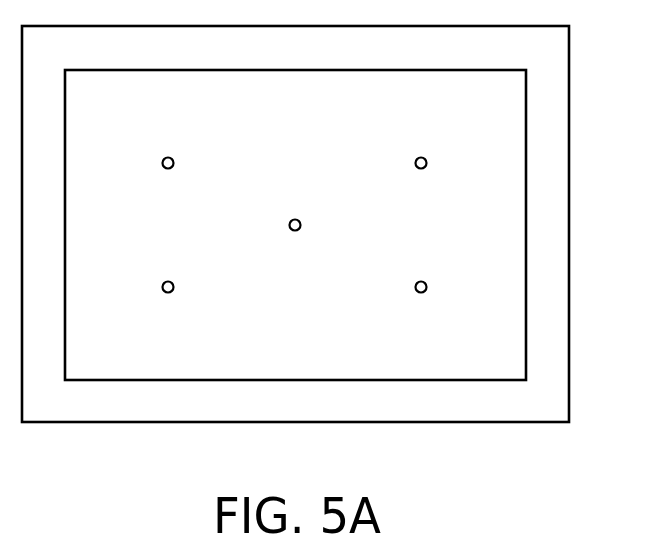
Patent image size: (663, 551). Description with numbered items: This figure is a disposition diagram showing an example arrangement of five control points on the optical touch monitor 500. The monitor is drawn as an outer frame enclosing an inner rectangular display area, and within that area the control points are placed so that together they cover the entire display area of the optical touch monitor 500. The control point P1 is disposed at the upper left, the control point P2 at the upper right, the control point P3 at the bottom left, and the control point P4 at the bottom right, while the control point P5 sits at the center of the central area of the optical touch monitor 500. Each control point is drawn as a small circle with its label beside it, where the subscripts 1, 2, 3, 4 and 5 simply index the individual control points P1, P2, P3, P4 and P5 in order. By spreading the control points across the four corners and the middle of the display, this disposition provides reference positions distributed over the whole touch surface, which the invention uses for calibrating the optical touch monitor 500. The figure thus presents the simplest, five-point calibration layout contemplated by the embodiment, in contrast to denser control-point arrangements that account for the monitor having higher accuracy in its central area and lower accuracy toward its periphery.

The optical touch monitor 500 is at (526, 222).
The reference point P1 1 is at (170, 143).
The reference point P2 2 is at (428, 143).
The reference point P3 3 is at (170, 310).
The reference point P4 4 is at (428, 310).
The reference point P5 5 is at (294, 203).
The control point P1 is at (170, 143).
The control point P2 is at (428, 143).
The control point P3 is at (170, 310).
The control point P4 is at (428, 310).
The control point P5 is at (294, 203).